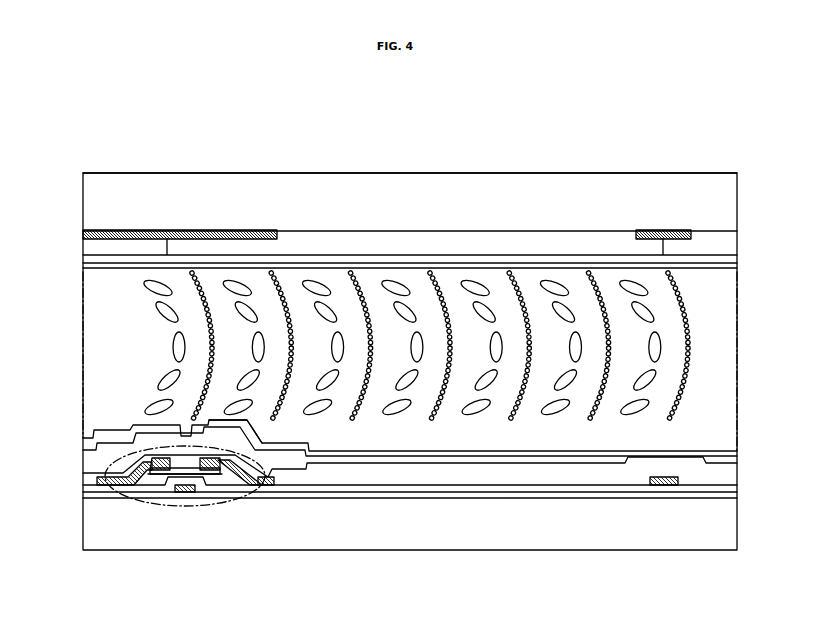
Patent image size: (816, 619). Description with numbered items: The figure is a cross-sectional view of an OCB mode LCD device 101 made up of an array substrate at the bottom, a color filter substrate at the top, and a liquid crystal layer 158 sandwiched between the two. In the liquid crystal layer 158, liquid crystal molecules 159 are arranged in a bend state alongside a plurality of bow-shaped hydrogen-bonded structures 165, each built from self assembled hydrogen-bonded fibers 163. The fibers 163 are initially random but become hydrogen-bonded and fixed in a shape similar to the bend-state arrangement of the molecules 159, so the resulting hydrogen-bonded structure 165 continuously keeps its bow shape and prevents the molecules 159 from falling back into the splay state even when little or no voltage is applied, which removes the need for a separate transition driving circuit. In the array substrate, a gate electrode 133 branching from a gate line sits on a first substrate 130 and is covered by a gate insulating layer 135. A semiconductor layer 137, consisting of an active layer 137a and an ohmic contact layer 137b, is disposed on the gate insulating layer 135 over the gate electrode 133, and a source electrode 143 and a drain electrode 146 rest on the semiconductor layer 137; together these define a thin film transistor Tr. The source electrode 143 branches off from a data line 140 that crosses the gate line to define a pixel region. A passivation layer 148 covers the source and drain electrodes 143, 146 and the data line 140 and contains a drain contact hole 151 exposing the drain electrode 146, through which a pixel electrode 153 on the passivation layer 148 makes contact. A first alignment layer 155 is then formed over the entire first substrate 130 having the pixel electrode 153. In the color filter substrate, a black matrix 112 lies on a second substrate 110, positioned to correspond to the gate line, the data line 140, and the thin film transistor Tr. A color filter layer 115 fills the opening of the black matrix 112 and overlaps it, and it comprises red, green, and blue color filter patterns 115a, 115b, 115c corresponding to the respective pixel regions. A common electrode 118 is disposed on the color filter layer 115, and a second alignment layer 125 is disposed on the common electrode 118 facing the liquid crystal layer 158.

The OCB mode LCD device 101 is at (730, 148).
The second substrate 110 is at (703, 212).
The black matrix 112 is at (240, 238).
The color filter layer 115 is at (148, 130).
The red color filter pattern 115a is at (398, 237).
The green color filter pattern 115b is at (705, 232).
The blue color filter pattern 115c is at (148, 245).
The common electrode 118 is at (518, 259).
The second alignment layer 125 is at (573, 268).
The first substrate 130 is at (705, 530).
The gate electrode 133 is at (186, 494).
The gate insulating layer 135 is at (387, 492).
The semiconductor layer 137 is at (245, 490).
The active layer 137a is at (228, 482).
The ohmic contact layer 137b is at (256, 486).
The data line 140 is at (660, 487).
The source electrode 143 is at (137, 486).
The drain electrode 146 is at (212, 477).
The passivation layer 148 is at (436, 478).
The drain contact hole 151 is at (262, 436).
The pixel electrode 153 is at (488, 462).
The first alignment layer 155 is at (550, 453).
The liquid crystal layer 158 is at (90, 364).
The liquid crystal molecules 159 is at (153, 306).
The self assembled hydrogen-bonded fibers 163 is at (351, 428).
The hydrogen-bonded structure 165 is at (437, 428).
The thin film transistor Tr is at (152, 505).